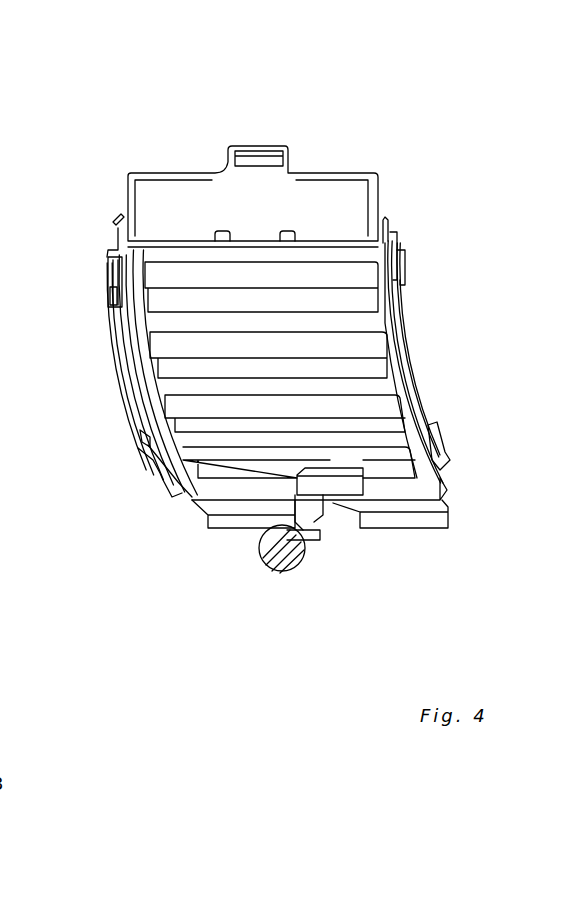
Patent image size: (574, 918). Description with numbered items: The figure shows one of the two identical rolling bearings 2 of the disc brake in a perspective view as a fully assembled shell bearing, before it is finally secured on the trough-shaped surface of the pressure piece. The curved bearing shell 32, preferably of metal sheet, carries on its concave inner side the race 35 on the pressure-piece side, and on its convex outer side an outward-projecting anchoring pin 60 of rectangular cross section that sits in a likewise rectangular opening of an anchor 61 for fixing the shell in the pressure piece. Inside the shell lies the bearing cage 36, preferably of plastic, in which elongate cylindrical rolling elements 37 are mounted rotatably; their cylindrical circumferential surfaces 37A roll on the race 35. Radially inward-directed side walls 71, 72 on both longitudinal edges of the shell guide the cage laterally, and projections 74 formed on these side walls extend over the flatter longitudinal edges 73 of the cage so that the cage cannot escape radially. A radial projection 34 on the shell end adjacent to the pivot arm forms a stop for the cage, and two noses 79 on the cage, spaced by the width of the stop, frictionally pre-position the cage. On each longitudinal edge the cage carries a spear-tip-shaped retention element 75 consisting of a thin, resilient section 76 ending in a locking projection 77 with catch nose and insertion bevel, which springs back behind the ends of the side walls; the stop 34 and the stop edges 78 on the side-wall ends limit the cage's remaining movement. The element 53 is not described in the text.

The rolling bearing 2 is at (282, 359).
The bearing shell 32 is at (300, 174).
The radial projection 34 is at (263, 157).
The race on the pressure-piece side 35 is at (150, 212).
The bearing cage 36 is at (168, 238).
The rolling elements 37 is at (340, 297).
The cylindrical circumferential surfaces 37A is at (226, 452).
The holding block 53 is at (300, 468).
The anchoring pin 60 is at (302, 530).
The anchor 61 is at (312, 547).
The side wall 71 is at (130, 378).
The side wall 72 is at (418, 400).
The longitudinal edges 73 is at (192, 503).
The projections 74 is at (125, 298).
The retention element 75 is at (120, 224).
The section extending in the circumferential direction 76 is at (118, 248).
The locking projection 77 is at (391, 232).
The stop edges 78 is at (118, 253).
The noses 79 is at (219, 230).